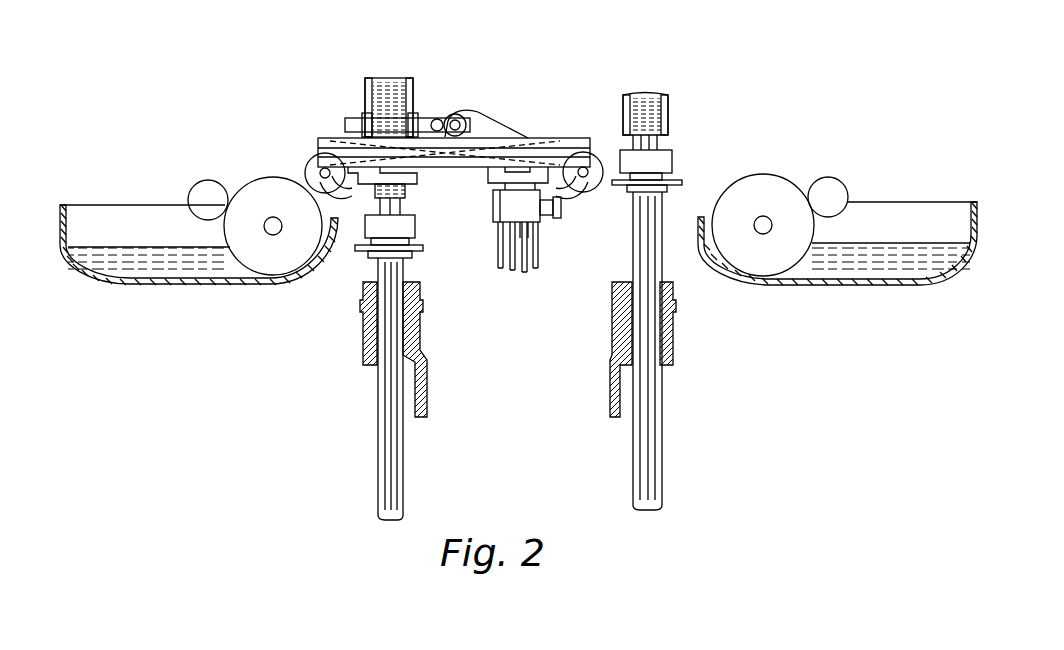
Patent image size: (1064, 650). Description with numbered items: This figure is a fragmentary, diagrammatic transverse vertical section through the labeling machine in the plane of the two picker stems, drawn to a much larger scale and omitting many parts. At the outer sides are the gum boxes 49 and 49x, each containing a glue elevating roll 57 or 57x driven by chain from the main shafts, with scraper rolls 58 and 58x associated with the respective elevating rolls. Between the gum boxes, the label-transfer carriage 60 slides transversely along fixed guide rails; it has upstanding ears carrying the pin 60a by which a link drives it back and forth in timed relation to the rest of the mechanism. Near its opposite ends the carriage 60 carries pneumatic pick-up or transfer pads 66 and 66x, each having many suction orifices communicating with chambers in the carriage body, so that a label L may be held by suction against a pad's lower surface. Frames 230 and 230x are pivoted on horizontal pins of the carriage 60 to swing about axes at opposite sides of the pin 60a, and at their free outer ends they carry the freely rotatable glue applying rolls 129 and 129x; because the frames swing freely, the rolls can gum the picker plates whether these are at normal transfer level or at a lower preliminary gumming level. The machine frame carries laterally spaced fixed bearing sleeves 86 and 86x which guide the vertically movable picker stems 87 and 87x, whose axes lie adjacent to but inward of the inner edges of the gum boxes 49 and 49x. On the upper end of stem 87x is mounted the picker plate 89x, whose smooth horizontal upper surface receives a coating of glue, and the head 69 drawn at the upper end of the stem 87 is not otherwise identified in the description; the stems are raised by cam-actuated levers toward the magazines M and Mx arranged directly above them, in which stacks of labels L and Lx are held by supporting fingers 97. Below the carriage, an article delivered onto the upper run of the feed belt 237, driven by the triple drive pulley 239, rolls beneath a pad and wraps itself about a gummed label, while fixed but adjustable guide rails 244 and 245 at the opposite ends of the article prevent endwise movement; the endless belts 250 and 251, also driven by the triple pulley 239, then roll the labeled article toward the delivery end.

The gum box 49 is at (977, 210).
The gum box 49x is at (60, 235).
The glue elevating roll 57 is at (767, 180).
The glue elevating roll 57x is at (268, 182).
The scraper roll 58 is at (830, 190).
The scraper roll 58x is at (204, 186).
The label-transfer carriage 60 is at (575, 138).
The pin 60a is at (470, 108).
The glue applying roll 129 is at (605, 161).
The glue applying roll 129x is at (312, 165).
The frame 230 is at (520, 111).
The frame 230x is at (335, 185).
The label L is at (562, 195).
The label Lx is at (400, 78).
The magazine M is at (678, 104).
The magazine Mx is at (355, 100).
The supporting fingers 97 is at (630, 142).
The head 69 is at (665, 132).
The pneumatic pick-up or transfer pad 66 is at (490, 184).
The pneumatic pick-up or transfer pad 66x is at (418, 180).
The picker plate 89x is at (403, 200).
The picker stem 87 is at (662, 406).
The picker stem 87x is at (378, 433).
The bearing sleeve 86 is at (610, 333).
The bearing sleeve 86x is at (422, 333).
The guide rail 245 is at (494, 210).
The guide rail 244 is at (558, 218).
The endless belt 250 is at (530, 228).
The feed belt 237 is at (518, 272).
The triple drive pulley 239 is at (488, 262).
The endless belt 251 is at (497, 266).